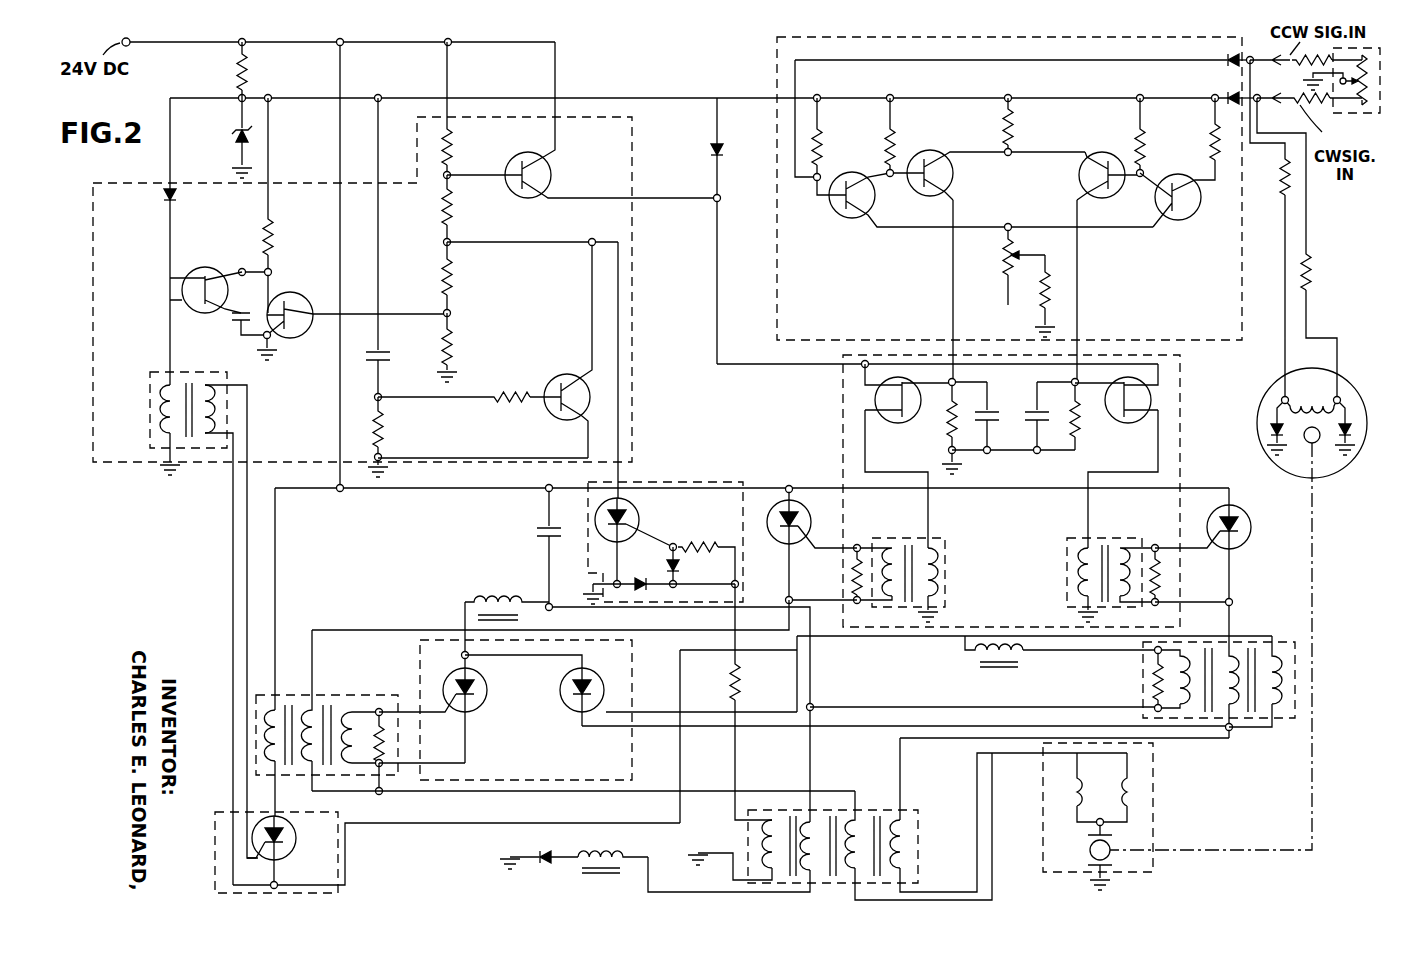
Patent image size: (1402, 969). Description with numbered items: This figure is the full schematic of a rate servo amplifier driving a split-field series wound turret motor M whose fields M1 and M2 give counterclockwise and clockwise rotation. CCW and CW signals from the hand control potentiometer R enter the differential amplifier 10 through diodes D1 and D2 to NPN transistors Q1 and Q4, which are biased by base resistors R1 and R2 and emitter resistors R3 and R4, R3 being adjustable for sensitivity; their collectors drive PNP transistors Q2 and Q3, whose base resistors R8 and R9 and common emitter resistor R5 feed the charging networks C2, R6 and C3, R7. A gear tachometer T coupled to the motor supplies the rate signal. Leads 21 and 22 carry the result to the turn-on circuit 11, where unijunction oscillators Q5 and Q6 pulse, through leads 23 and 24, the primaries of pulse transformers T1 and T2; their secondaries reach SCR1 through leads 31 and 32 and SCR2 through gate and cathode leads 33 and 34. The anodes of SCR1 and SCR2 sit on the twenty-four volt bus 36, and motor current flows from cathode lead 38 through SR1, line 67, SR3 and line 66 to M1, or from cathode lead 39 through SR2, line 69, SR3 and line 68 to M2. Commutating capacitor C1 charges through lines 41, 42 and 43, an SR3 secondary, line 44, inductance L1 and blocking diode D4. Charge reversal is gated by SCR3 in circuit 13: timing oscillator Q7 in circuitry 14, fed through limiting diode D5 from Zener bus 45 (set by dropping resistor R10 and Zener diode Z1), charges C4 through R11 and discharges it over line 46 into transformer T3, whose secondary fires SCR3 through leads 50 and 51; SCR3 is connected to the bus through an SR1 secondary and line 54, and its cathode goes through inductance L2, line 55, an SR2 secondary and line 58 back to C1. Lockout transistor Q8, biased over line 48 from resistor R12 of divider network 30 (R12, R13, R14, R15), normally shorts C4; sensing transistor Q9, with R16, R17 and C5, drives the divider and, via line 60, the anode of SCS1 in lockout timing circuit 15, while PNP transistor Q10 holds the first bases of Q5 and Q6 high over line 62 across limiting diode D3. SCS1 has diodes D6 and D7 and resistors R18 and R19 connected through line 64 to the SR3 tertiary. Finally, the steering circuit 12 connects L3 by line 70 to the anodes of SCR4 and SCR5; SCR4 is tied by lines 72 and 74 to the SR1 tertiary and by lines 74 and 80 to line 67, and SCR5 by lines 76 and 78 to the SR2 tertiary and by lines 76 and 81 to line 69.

The differential amplifier 10 is at (777, 46).
The turn-on circuit 11 is at (843, 402).
The steering circuit 12 is at (420, 652).
The capacitor charge reversal circuit 13 is at (215, 848).
The frequency control and lockout circuitry 14 is at (93, 275).
The lockout timing circuit 15 is at (716, 482).
The lead 21 is at (953, 314).
The lead 22 is at (1078, 314).
The lead 23 is at (928, 515).
The lead 24 is at (1088, 515).
The voltage divider network 30 is at (484, 212).
The SCR1 gate lead 31 is at (822, 550).
The SCR1 cathode lead 32 is at (826, 598).
The gate lead 33 is at (1193, 560).
The cathode lead 34 is at (1212, 600).
The main power bus 36 is at (472, 43).
The cathode lead 38 is at (660, 630).
The cathode lead 39 is at (1235, 619).
The lead 41 is at (549, 561).
The lead 42 is at (716, 598).
The lead 43 is at (811, 766).
The lead 44 is at (676, 892).
The Zener supply bus 45 is at (312, 98).
The line 46 is at (168, 333).
The line 48 is at (386, 313).
The lead 50 is at (233, 513).
The lead 51 is at (247, 533).
The line 54 is at (276, 803).
The line 55 is at (1060, 652).
The line 58 is at (908, 707).
The line 60 is at (620, 438).
The line 62 is at (717, 266).
The line 64 is at (736, 741).
The line 66 is at (992, 816).
The CCW power line 67 is at (530, 792).
The line 68 is at (977, 852).
The CW power line 69 is at (905, 753).
The line 70 is at (465, 612).
The line 72 is at (440, 712).
The line 74 is at (465, 748).
The line 76 is at (582, 729).
The line 78 is at (662, 712).
The line 80 is at (379, 792).
The line 81 is at (1258, 729).
The hand control potentiometer R is at (1364, 120).
The base resistor R1 is at (824, 150).
The base resistor R2 is at (1208, 150).
The adjustable emitter resistor R3 is at (1000, 262).
The emitter resistor R4 is at (1055, 270).
The common emitter resistor R5 is at (1020, 122).
The charging resistor R6 is at (948, 430).
The charging resistor R7 is at (1080, 425).
The base lead resistor R8 is at (896, 140).
The base lead resistor R9 is at (1130, 145).
The dropping resistor R10 is at (234, 58).
The dropping resistor R11 is at (275, 228).
The voltage divider resistor R12 is at (463, 336).
The voltage divider resistor R13 is at (463, 270).
The voltage divider resistor R14 is at (463, 213).
The voltage divider resistor R15 is at (463, 139).
The coupling resistor R16 is at (501, 402).
The resistor R17 is at (384, 430).
The current limiting resistor R18 is at (722, 545).
The current limiting resistor R19 is at (742, 683).
The NPN transistor Q1 is at (850, 218).
The PNP transistor Q2 is at (953, 168).
The PNP transistor Q3 is at (1080, 178).
The NPN transistor Q4 is at (1200, 206).
The unijunction transistor Q5 is at (896, 423).
The unijunction transistor Q6 is at (1136, 426).
The unijunction transistor timing oscillator Q7 is at (205, 270).
The NPN lockout transistor Q8 is at (312, 333).
The lockout sensing transistor Q9 is at (549, 382).
The PNP lockout transistor Q10 is at (551, 173).
The commutating capacitor C1 is at (537, 532).
The charging capacitor C2 is at (991, 410).
The charging capacitor C3 is at (1026, 420).
The charging capacitor C4 is at (230, 318).
The capacitor C5 is at (374, 358).
The diode D1 is at (1222, 62).
The diode D2 is at (1222, 97).
The limiting diode D3 is at (712, 150).
The blocking diode D4 is at (532, 853).
The limiting diode D5 is at (162, 200).
The decoupling diode D6 is at (682, 569).
The limiting diode D7 is at (641, 580).
The Zener diode Z1 is at (236, 132).
The controlled rectifier SCR1 is at (770, 520).
The controlled rectifier SCR2 is at (1251, 524).
The switching controlled rectifier SCR3 is at (294, 846).
The steering controlled rectifier SCR4 is at (488, 693).
The steering controlled rectifier SCR5 is at (570, 706).
The controlled switching device SCS1 is at (636, 508).
The signal coupling transformer T1 is at (945, 554).
The signal coupling transformer T2 is at (1067, 553).
The pulse transformer T3 is at (150, 396).
The gear tachometer T is at (1258, 419).
The inductance L1 is at (620, 851).
The inductance L2 is at (975, 656).
The inductance L3 is at (483, 596).
The saturable reactor SR1 is at (378, 690).
The saturable reactor SR2 is at (1143, 679).
The saturable reactor SR3 is at (918, 836).
The turret motor M is at (1177, 666).
The CCW motor field winding M1 is at (1067, 809).
The CW motor field winding M2 is at (1133, 809).